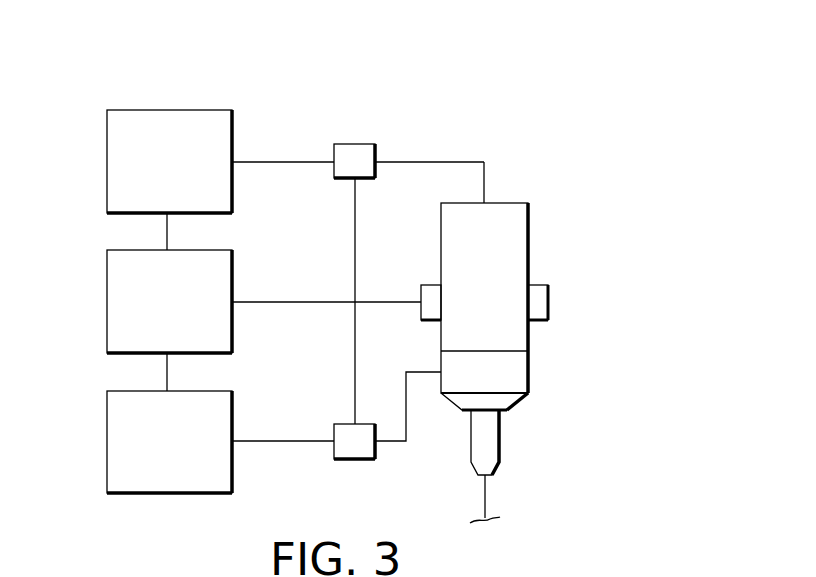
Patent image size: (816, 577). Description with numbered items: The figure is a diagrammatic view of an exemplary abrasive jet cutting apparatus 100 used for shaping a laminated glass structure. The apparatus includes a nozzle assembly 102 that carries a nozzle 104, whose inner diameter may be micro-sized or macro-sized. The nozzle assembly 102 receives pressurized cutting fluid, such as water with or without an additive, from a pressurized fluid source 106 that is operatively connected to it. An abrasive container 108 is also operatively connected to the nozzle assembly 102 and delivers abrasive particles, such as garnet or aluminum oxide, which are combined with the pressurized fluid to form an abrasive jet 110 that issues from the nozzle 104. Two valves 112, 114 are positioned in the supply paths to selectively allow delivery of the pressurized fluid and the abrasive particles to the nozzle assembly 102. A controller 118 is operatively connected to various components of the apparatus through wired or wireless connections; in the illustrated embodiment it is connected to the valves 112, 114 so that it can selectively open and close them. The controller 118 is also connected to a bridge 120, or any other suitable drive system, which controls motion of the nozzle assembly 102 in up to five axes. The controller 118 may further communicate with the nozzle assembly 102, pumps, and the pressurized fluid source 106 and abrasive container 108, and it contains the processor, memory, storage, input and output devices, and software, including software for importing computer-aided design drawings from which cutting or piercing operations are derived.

The abrasive jet cutting apparatus 100 is at (572, 77).
The nozzle assembly 102 is at (570, 208).
The nozzle 104 is at (500, 445).
The pressurized fluid source 106 is at (118, 152).
The abrasive container 108 is at (118, 432).
The abrasive jet 110 is at (485, 503).
The valve 112 is at (360, 148).
The valve 114 is at (345, 435).
The controller 118 is at (118, 294).
The bridge 120 is at (548, 300).